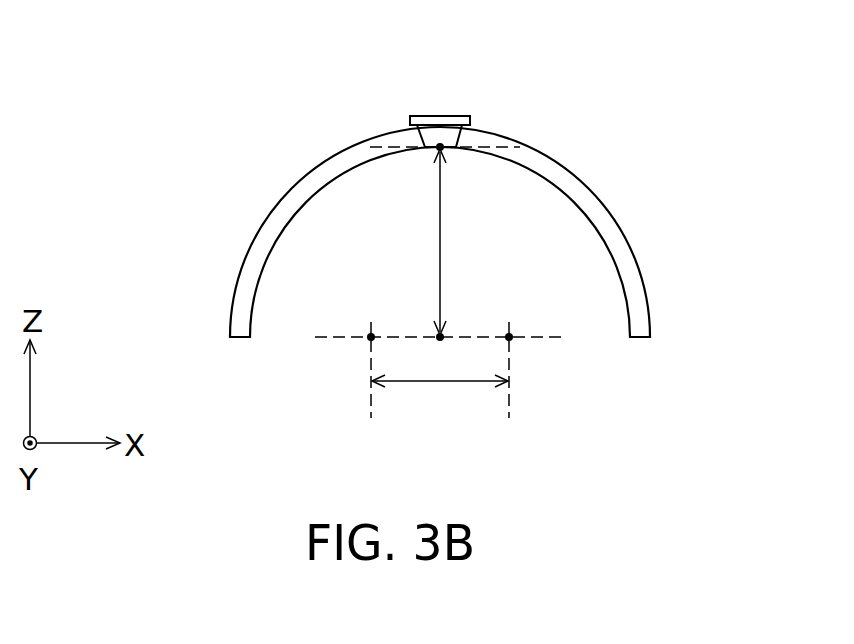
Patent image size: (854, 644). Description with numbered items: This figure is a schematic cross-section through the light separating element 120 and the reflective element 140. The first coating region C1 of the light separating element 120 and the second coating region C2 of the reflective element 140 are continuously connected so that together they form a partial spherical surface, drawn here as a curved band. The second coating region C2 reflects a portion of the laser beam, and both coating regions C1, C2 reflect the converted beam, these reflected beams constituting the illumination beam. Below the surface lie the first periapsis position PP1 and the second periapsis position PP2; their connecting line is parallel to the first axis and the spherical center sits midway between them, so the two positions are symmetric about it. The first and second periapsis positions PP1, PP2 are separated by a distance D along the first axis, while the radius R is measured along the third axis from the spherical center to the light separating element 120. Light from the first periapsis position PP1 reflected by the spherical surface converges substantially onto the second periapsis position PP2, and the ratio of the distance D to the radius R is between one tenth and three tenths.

The light separating element 120 is at (438, 133).
The reflective element 140 is at (568, 182).
The first coating region C1 is at (447, 163).
The second coating region C2 is at (291, 241).
The first periapsis position PP1 is at (371, 341).
The second periapsis position PP2 is at (509, 341).
The radius of the partial spherical surface R is at (455, 242).
The distance between the first and second periapsis positions D is at (440, 400).